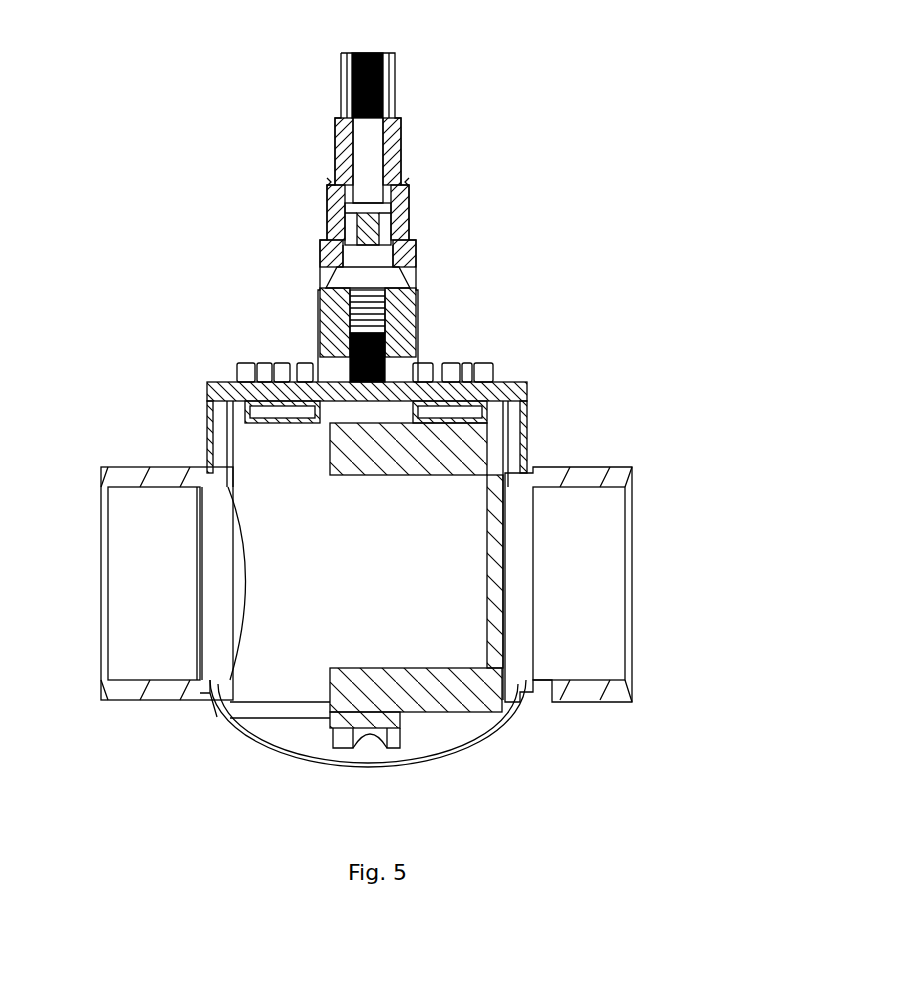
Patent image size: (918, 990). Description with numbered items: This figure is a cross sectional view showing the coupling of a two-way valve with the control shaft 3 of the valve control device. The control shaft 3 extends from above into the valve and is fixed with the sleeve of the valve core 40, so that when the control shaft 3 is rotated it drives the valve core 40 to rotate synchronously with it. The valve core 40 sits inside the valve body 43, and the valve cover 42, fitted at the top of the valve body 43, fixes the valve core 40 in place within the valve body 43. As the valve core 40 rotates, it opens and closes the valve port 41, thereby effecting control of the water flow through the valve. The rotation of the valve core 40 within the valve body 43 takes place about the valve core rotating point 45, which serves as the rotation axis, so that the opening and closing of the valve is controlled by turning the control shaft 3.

The control shaft 3 is at (400, 142).
The valve core 40 is at (437, 453).
The valve port 41 is at (587, 480).
The valve cover 42 is at (247, 387).
The valve body 43 is at (277, 738).
The valve core rotating point 45 is at (373, 738).